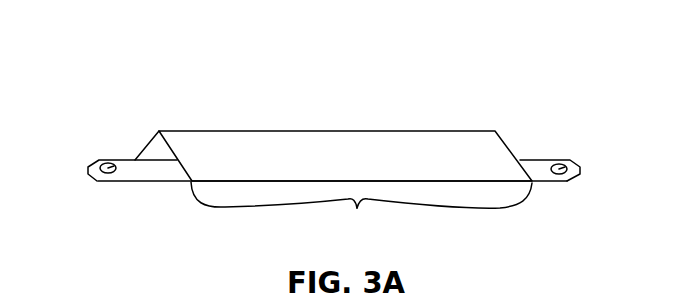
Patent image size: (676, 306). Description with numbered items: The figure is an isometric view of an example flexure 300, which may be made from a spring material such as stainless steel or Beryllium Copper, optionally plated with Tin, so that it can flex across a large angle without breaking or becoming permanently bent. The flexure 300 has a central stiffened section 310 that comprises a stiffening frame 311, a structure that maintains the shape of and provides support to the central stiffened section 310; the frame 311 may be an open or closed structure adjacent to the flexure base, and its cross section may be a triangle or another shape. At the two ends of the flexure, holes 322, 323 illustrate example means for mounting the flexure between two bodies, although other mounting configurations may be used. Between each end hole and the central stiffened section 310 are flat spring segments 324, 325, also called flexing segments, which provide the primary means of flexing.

The flexure 300 is at (217, 33).
The central stiffened section 310 is at (361, 214).
The stiffening frame 311 is at (313, 152).
The hole 322 is at (103, 164).
The hole 323 is at (551, 164).
The flat spring segment 324 is at (132, 167).
The flat spring segment 325 is at (540, 170).